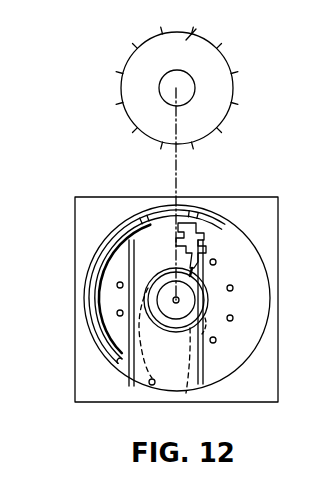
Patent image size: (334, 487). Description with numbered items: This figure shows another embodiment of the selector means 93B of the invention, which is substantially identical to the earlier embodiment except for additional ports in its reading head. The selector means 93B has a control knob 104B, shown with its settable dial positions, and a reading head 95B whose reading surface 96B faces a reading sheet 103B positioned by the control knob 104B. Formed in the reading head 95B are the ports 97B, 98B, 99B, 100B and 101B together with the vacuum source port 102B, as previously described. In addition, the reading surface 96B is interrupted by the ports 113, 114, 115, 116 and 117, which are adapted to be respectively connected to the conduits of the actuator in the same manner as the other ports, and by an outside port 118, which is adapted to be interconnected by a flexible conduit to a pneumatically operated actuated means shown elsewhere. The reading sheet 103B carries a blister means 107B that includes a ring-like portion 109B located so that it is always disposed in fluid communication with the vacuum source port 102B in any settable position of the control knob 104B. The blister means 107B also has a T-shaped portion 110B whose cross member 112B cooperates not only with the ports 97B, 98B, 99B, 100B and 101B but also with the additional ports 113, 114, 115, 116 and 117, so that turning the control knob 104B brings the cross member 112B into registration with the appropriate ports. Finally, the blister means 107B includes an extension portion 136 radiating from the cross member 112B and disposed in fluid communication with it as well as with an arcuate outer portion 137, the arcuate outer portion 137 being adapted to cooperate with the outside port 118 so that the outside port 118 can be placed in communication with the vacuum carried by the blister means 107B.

The selector means 93B is at (247, 188).
The control knob 104B is at (140, 86).
The reading head 95B is at (167, 311).
The reading surface 96B is at (153, 298).
The port 97B is at (263, 251).
The port 98B is at (272, 287).
The port 99B is at (272, 320).
The port 100B is at (265, 348).
The port 101B is at (174, 334).
The vacuum source port 102B is at (172, 340).
The reading sheet 103B is at (90, 289).
The blister means 107B is at (222, 238).
The ring-like portion 109B is at (201, 300).
The T-shaped portion 110B is at (167, 265).
The cross member 112B is at (265, 232).
The port 113 is at (154, 371).
The port 114 is at (81, 313).
The port 115 is at (81, 285).
The port 116 is at (154, 286).
The port 117 is at (144, 196).
The outside port 118 is at (137, 406).
The extension portion 136 is at (200, 200).
The arcuate outer portion 137 is at (104, 202).